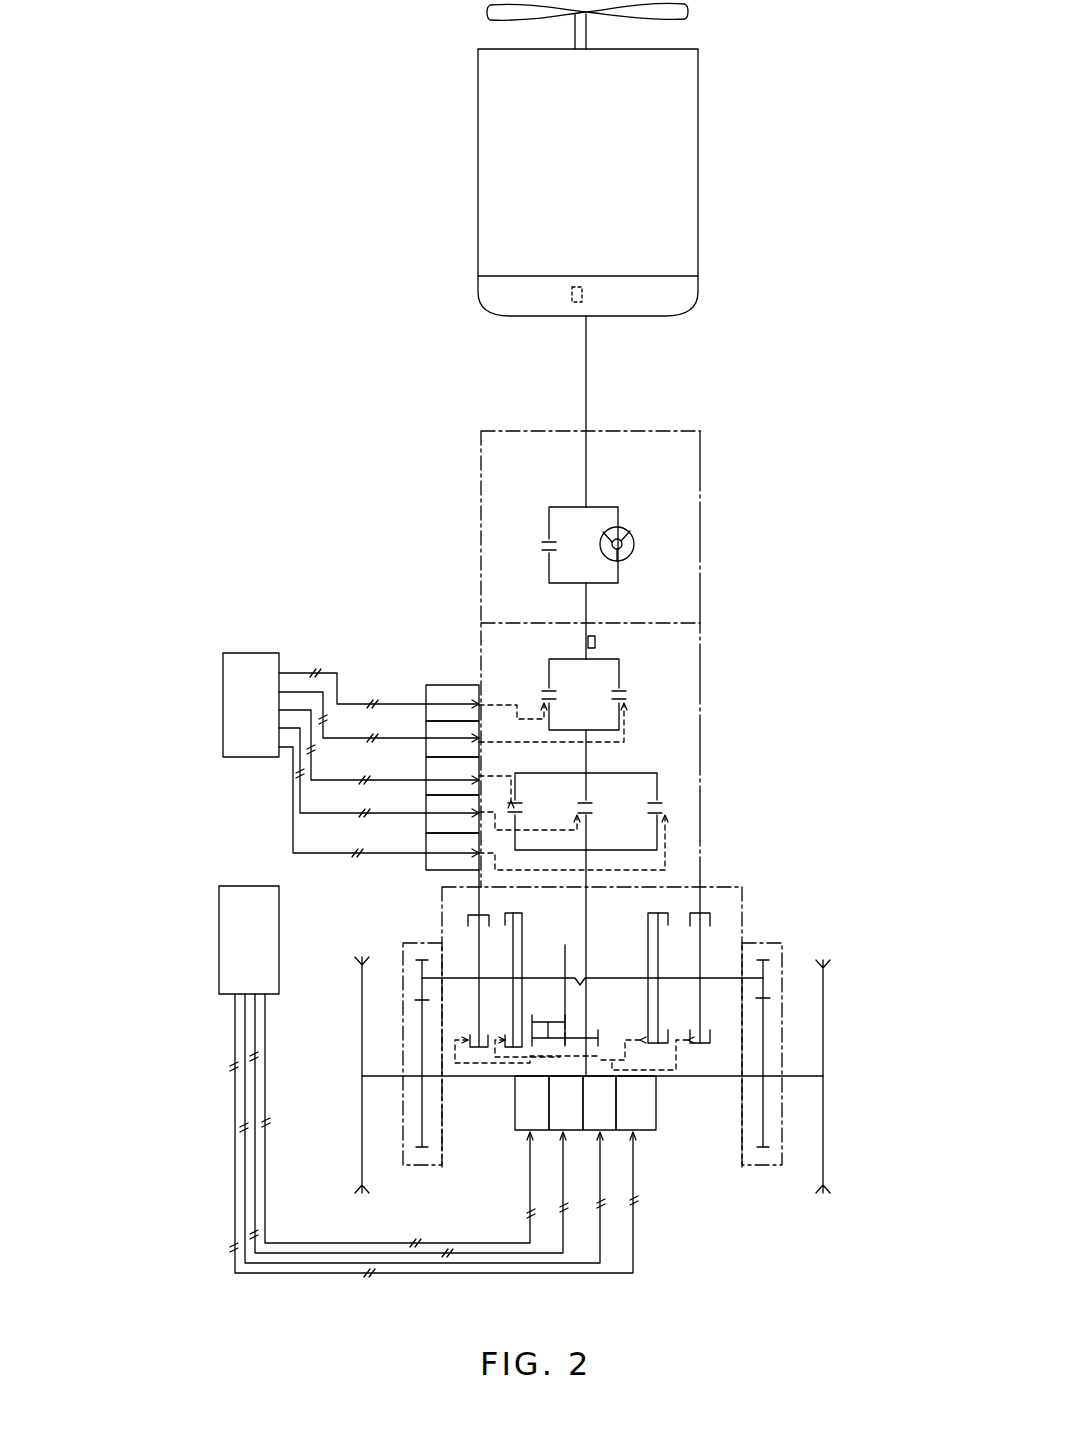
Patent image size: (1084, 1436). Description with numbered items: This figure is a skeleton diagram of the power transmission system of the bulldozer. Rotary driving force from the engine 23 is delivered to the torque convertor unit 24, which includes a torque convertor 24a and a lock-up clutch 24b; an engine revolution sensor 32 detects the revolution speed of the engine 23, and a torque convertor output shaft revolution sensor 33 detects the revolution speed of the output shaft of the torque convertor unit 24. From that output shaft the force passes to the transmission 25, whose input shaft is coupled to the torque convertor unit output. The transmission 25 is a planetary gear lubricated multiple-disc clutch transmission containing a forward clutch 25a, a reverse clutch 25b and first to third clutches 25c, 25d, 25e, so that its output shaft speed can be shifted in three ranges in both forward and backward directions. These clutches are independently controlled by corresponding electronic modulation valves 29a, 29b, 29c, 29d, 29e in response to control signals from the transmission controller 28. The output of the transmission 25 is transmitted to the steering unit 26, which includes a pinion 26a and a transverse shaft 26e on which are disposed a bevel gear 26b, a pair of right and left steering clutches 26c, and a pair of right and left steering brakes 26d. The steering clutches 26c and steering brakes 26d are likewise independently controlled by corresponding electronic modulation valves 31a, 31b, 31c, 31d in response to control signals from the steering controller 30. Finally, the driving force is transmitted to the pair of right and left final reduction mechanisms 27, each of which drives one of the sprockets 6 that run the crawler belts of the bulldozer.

The engine 23 is at (698, 250).
The engine revolution sensor 32 is at (570, 292).
The torque convertor unit 24 is at (700, 458).
The torque convertor 24a is at (634, 544).
The lock-up clutch 24b is at (547, 541).
The torque convertor output shaft revolution sensor 33 is at (597, 641).
The transmission 25 is at (700, 752).
The forward clutch 25a is at (548, 688).
The reverse clutch 25b is at (628, 693).
The first clutch 25c is at (500, 833).
The second clutch 25d is at (590, 800).
The third clutch 25e is at (663, 808).
The transmission controller 28 is at (256, 655).
The electronic modulation valve 29a is at (455, 690).
The electronic modulation valve 29b is at (437, 740).
The electronic modulation valve 29c is at (432, 783).
The electronic modulation valve 29d is at (438, 820).
The electronic modulation valve 29e is at (439, 852).
The steering controller 30 is at (218, 903).
The steering unit 26 is at (745, 912).
The pinion 26a is at (548, 1020).
The bevel gear 26b is at (566, 963).
The steering clutch 26c is at (497, 1047).
The steering brake 26d is at (472, 1050).
The transverse shaft 26e is at (588, 1024).
The final reduction mechanism 27 is at (412, 1167).
The sprocket 6 is at (362, 1128).
The electronic modulation valve 31a is at (525, 1122).
The electronic modulation valve 31b is at (567, 1118).
The electronic modulation valve 31c is at (603, 1118).
The electronic modulation valve 31d is at (638, 1107).